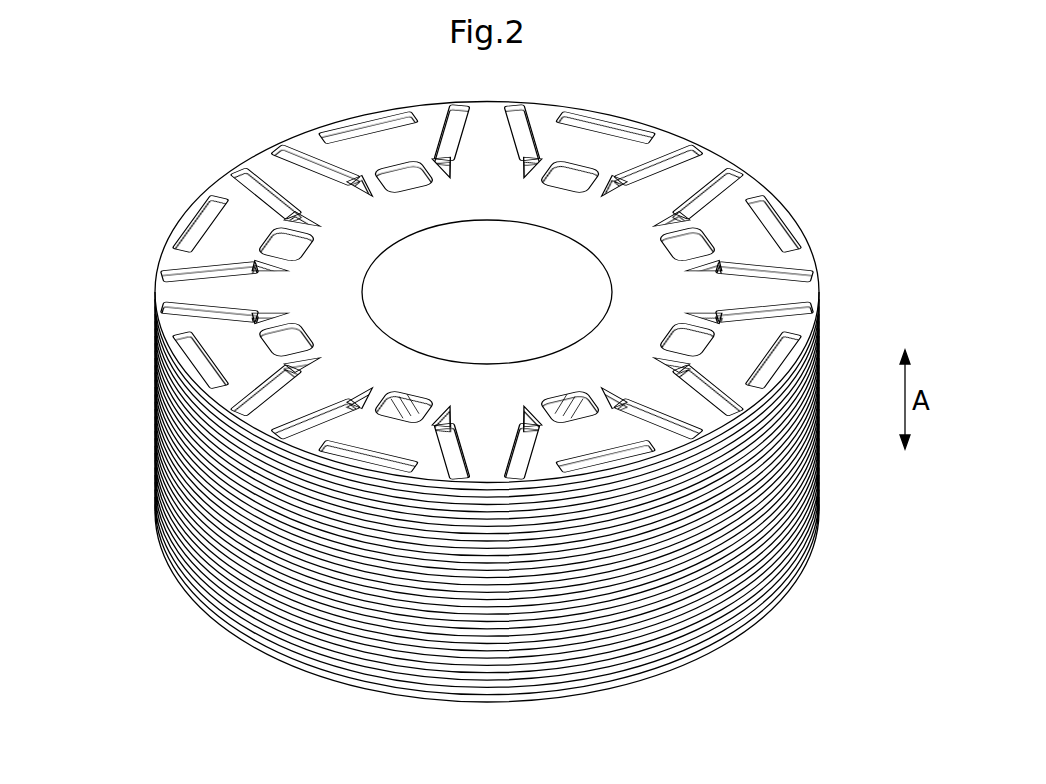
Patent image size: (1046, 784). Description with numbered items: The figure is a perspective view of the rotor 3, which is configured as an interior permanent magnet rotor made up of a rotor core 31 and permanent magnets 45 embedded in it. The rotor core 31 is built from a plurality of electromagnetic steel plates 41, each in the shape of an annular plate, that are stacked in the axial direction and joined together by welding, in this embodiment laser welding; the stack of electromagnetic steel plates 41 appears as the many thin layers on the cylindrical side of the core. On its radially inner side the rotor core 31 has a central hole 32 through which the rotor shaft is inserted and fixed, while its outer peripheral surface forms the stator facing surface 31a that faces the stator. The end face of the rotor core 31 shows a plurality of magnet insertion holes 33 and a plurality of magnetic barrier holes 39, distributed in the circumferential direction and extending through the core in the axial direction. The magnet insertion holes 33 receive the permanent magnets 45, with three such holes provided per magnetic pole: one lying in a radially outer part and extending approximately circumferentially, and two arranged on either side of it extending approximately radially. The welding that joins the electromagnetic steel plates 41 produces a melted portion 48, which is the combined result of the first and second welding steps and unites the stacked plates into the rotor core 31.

The rotor 3 is at (453, 374).
The rotor core 31 is at (690, 135).
The stator facing surface 31a is at (240, 632).
The central hole 32 is at (367, 304).
The magnet insertion hole 33 is at (655, 215).
The magnetic barrier hole 39 is at (552, 188).
The electromagnetic steel plate 41 is at (197, 547).
The permanent magnet 45 is at (320, 168).
The melted portion 48 is at (415, 396).